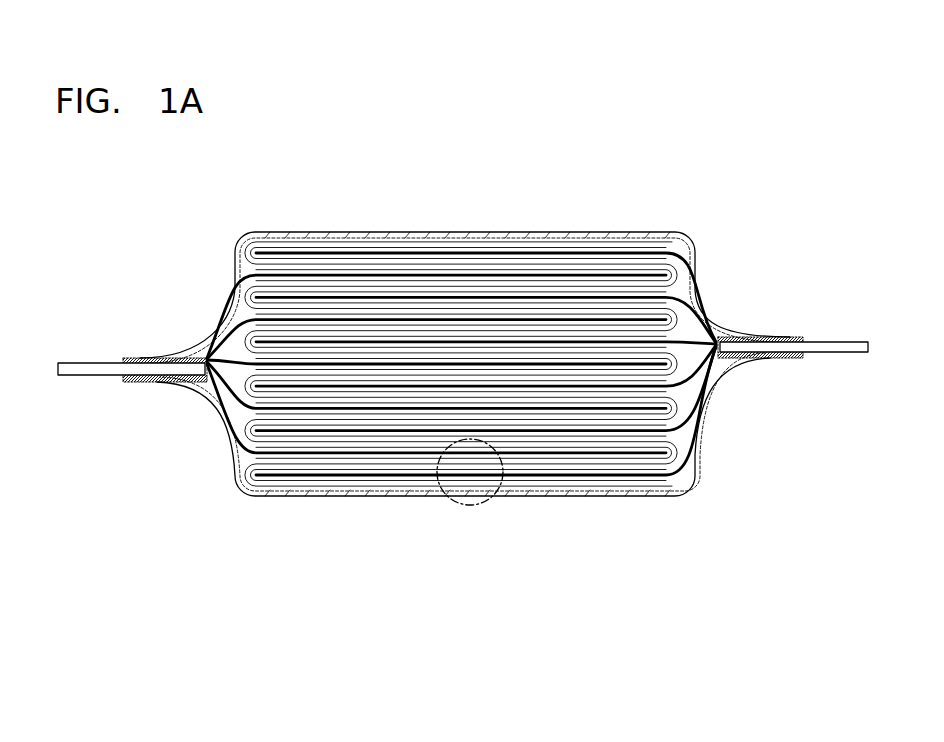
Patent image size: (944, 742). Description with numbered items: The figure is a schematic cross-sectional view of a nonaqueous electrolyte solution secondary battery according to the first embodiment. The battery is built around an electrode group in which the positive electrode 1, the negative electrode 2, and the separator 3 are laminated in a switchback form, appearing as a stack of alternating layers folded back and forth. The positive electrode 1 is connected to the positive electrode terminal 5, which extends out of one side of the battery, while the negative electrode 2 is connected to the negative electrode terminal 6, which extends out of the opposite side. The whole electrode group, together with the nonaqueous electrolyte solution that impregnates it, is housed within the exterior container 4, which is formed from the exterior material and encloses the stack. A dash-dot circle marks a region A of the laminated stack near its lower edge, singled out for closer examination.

The positive electrode 1 is at (333, 268).
The negative electrode 2 is at (400, 247).
The separator 3 is at (462, 260).
The exterior container 4 is at (528, 233).
The positive electrode terminal 5 is at (83, 362).
The negative electrode terminal 6 is at (836, 341).
The enlarged region A is at (482, 504).